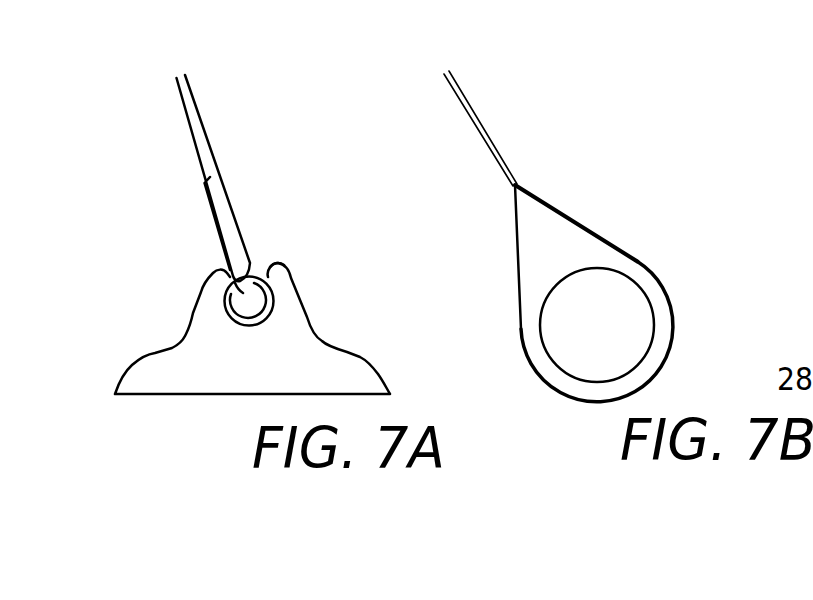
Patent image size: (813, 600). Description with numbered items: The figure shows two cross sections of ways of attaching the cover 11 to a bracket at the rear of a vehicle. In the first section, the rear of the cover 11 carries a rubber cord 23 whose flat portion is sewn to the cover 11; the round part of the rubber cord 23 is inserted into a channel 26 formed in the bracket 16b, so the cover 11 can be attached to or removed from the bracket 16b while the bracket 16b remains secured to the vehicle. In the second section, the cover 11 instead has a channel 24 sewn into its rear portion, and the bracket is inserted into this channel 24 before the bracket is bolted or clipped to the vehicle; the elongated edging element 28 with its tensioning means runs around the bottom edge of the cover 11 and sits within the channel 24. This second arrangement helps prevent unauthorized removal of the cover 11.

In FIG. 7A, the cover 11 is at (210, 134).
In FIG. 7B, the cover 11 is at (473, 123).
In FIG. 7A, the bracket 16b is at (177, 380).
In FIG. 7A, the rubber cord 23 is at (228, 273).
In FIG. 7A, the channel 26 is at (275, 282).
In FIG. 7B, the channel 24 is at (662, 282).
In FIG. 7B, the elongated edging element 28 is at (590, 363).